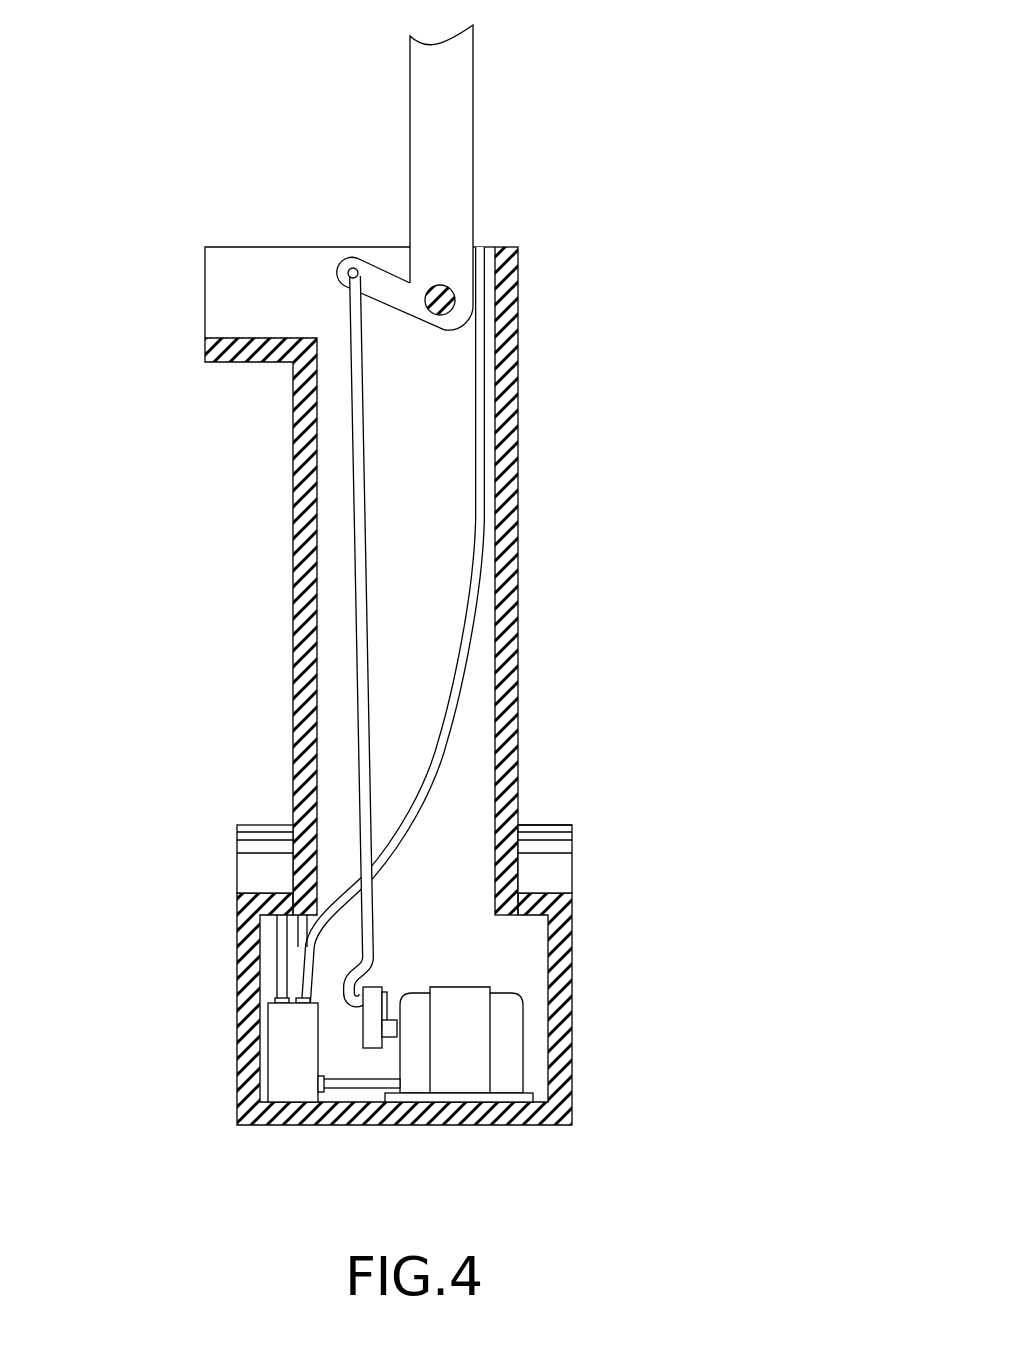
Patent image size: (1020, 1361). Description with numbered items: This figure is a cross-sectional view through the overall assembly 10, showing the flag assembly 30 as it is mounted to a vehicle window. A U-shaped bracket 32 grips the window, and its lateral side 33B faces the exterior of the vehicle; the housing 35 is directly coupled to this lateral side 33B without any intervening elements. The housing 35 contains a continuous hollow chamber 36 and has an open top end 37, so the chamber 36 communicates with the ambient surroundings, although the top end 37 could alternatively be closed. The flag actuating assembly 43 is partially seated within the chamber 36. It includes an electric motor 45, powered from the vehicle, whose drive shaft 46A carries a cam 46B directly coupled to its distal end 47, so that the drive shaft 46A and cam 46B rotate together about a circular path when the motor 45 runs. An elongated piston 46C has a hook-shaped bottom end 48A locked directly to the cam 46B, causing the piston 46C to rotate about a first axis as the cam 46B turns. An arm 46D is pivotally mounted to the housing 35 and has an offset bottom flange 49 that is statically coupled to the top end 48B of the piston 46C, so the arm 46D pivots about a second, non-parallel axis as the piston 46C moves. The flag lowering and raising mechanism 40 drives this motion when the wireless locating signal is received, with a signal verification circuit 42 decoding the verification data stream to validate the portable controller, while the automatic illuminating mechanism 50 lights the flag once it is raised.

The fuel delivery assembly 10 is at (192, 108).
The flag assembly 30 is at (517, 583).
The U-shaped bracket 32 is at (572, 835).
The lateral side 33B is at (257, 862).
The housing 35 is at (570, 1068).
The chamber 36 is at (440, 880).
The open top end 37 is at (291, 270).
The flag lowering and raising mechanism 40 is at (527, 990).
The signal verification circuit 42 is at (277, 1028).
The flag actuating assembly 43 is at (332, 1053).
The electric motor 45 is at (510, 1070).
The drive shaft 46A is at (387, 997).
The cam 46B is at (375, 1050).
The elongated piston 46C is at (353, 593).
The arm 46D is at (473, 110).
The distal end 47 is at (390, 1043).
The bottom end 48A is at (336, 976).
The top end 48B is at (346, 280).
The bottom flange 49 is at (386, 268).
The automatic illuminating mechanism 50 is at (462, 667).